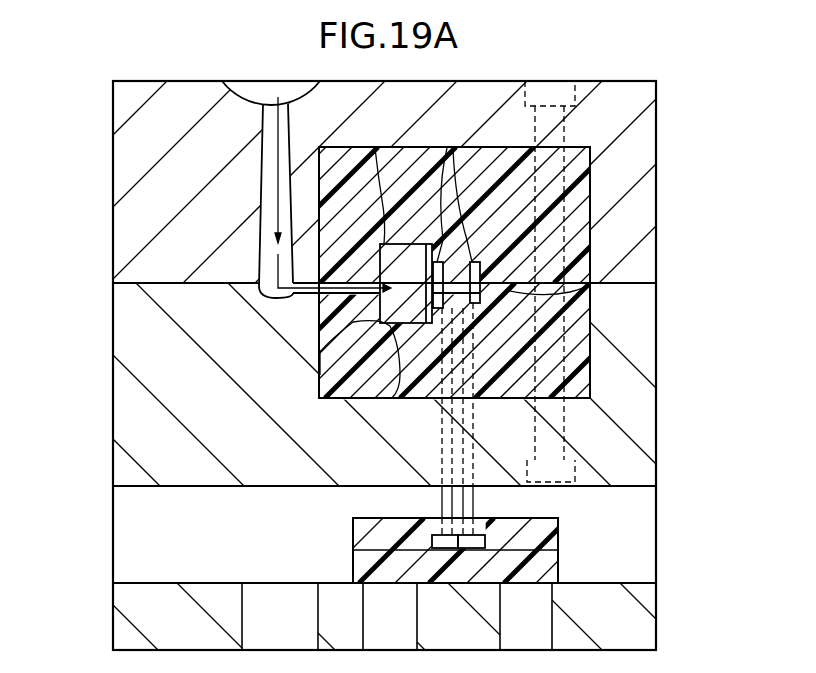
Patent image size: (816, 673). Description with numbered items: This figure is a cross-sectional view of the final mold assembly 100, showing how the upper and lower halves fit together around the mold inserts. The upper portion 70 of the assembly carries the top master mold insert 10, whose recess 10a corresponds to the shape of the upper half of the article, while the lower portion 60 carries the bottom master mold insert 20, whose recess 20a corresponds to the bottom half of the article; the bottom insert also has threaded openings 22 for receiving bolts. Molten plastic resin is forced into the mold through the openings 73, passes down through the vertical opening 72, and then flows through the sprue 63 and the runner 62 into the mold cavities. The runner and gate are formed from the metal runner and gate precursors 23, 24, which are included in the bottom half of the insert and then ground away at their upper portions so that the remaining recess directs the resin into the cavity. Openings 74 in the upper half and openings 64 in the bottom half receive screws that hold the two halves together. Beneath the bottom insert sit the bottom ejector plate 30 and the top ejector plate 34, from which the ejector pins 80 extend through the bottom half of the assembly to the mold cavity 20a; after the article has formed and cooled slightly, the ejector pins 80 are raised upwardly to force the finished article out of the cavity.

The injection molding apparatus 100 is at (84, 183).
The master mold insert 10 is at (596, 212).
The recess 10a is at (446, 192).
The master mold insert 20 is at (600, 330).
The recess 20a is at (590, 285).
The threaded openings 22 is at (400, 400).
The metal runner and gate precursor 23 is at (320, 362).
The metal runner and gate precursor 24 is at (375, 150).
The bottom ejector plate 30 is at (560, 563).
The top ejector plate 34 is at (558, 523).
The lower platen 60 is at (660, 403).
The runner 62 is at (322, 300).
The sprue 63 is at (267, 292).
The openings 64 is at (575, 482).
The upper platen 70 is at (658, 138).
The vertical opening 72 is at (262, 203).
The openings 73 is at (246, 93).
The openings 74 is at (578, 104).
The ejector pins 80 is at (467, 506).